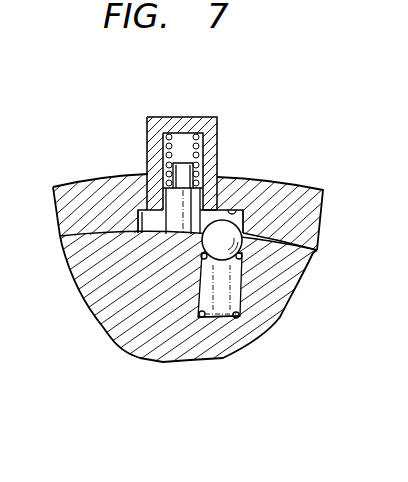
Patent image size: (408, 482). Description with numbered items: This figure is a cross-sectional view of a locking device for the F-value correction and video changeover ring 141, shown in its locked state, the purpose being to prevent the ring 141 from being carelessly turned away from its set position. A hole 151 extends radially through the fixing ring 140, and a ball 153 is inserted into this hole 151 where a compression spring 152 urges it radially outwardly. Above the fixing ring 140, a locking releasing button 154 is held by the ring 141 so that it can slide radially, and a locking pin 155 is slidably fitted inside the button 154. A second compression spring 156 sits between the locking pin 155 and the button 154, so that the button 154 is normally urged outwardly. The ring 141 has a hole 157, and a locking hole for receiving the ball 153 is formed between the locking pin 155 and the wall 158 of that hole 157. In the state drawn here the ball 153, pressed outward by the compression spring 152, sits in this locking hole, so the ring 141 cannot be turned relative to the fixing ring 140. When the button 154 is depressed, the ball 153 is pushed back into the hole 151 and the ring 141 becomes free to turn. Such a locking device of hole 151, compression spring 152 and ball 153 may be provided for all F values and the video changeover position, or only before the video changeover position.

The fixing ring 140 is at (290, 288).
The F-value correction and video changeover ring 141 is at (314, 216).
The hole 151 is at (242, 292).
The compression spring 152 is at (197, 318).
The ball 153 is at (311, 262).
The locking releasing button 154 is at (209, 135).
The locking pin 155 is at (170, 200).
The compression spring 156 is at (166, 140).
The hole 157 is at (229, 223).
The wall 158 is at (245, 224).